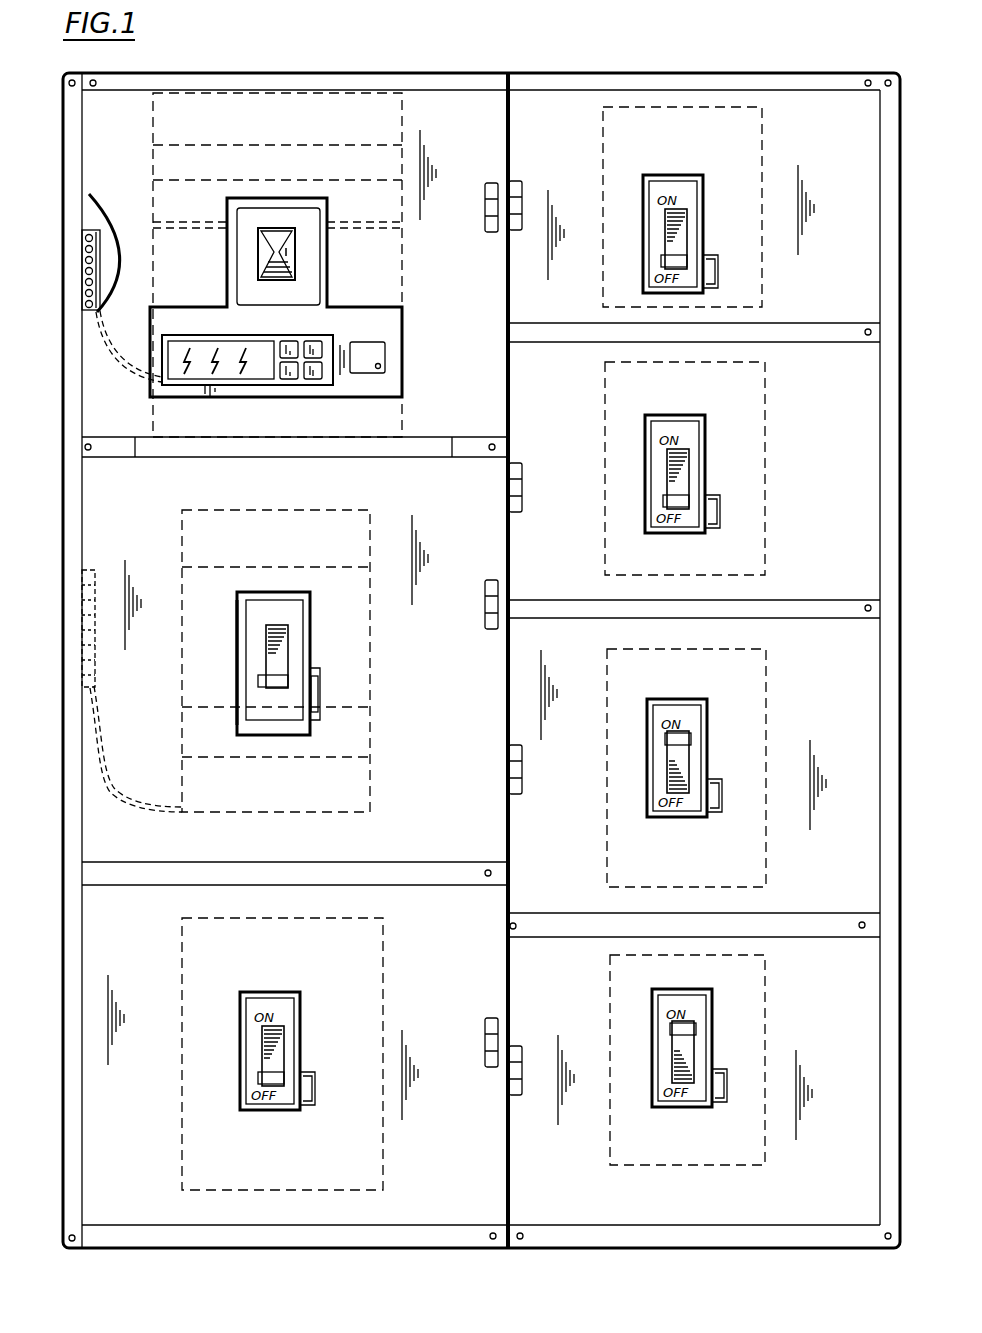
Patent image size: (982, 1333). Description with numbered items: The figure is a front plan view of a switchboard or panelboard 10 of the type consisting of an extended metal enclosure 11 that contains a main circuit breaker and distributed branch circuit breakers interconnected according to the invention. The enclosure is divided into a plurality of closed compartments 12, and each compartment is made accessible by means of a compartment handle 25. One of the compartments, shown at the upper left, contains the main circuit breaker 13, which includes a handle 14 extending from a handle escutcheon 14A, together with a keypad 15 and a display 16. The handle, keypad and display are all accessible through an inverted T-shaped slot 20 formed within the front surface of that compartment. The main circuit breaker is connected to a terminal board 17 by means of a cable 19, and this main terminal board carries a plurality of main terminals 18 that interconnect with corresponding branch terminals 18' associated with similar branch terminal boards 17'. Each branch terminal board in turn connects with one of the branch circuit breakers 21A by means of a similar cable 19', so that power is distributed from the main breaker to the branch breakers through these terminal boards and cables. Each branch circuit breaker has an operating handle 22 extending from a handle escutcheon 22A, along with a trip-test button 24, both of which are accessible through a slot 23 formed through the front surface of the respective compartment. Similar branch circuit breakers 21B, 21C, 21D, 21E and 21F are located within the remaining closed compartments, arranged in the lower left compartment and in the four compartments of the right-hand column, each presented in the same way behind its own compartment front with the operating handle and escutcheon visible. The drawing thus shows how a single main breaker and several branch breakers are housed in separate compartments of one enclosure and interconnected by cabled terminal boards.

The switchboard or panelboard 10 is at (828, 1275).
The extended metal enclosure 11 is at (56, 407).
The closed compartments 12 is at (82, 313).
The main circuit breaker 13 is at (404, 412).
The handle 14 is at (287, 226).
The handle escutcheon 14A is at (320, 206).
The keypad 15 is at (325, 386).
The display 16 is at (161, 389).
The terminal board 17 is at (111, 240).
The branch terminal boards 17' is at (126, 540).
The main terminals 18 is at (67, 270).
The branch terminals 18' is at (64, 628).
The cable 19 is at (129, 346).
The cable 19' is at (136, 749).
The inverted T-shaped slot 20 is at (327, 248).
The branch circuit breaker 21A is at (377, 717).
The branch circuit breaker 21B is at (436, 959).
The branch circuit breaker 21C is at (820, 129).
The branch circuit breaker 21D is at (820, 385).
The branch circuit breaker 21E is at (818, 669).
The branch circuit breaker 21F is at (822, 987).
The operating handle 22 is at (288, 672).
The handle escutcheon 22A is at (304, 606).
The slot 23 is at (237, 692).
The trip-test button 24 is at (318, 682).
The compartment handle 25 is at (516, 183).